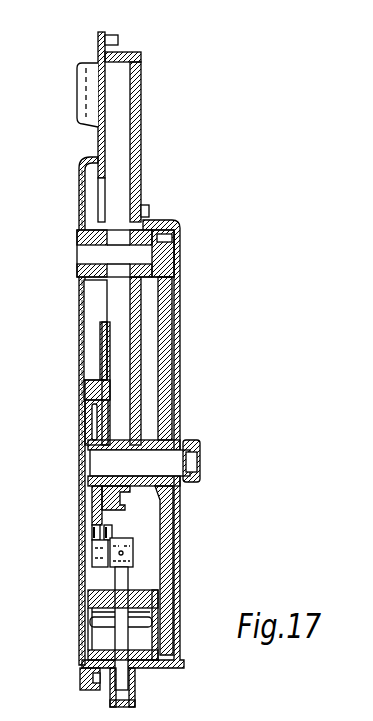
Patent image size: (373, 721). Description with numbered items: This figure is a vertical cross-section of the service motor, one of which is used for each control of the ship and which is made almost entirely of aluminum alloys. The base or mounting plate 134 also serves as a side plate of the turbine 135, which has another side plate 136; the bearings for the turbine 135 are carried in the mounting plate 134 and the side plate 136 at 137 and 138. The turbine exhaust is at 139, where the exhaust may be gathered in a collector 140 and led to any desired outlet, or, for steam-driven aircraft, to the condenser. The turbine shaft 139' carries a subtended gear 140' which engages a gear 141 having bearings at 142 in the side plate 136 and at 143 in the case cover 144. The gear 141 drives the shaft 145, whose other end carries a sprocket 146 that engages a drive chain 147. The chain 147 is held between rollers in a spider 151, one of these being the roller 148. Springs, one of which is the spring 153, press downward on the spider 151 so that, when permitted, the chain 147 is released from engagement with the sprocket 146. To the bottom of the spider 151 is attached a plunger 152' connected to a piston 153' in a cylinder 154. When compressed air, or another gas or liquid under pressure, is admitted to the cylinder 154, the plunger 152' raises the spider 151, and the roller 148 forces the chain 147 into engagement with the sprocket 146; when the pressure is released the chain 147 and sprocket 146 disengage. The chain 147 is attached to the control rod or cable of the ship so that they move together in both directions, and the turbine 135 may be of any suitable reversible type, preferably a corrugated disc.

The base or mounting plate 134 is at (78, 90).
The turbine 135 is at (117, 110).
The side plate 136 is at (141, 163).
The bearing 137 is at (77, 247).
The bearing 138 is at (180, 251).
The turbine exhaust 139 is at (62, 411).
The turbine shaft 139' is at (120, 255).
The collector 140 is at (64, 279).
The subtended gear 140' is at (191, 214).
The gear 141 is at (165, 330).
The bearing 142 is at (184, 497).
The bearing 143 is at (192, 440).
The case cover 144 is at (182, 289).
The shaft 145 is at (139, 458).
The sprocket 146 is at (92, 423).
The drive chain 147 is at (92, 532).
The roller 148 is at (92, 557).
The spider 151 is at (184, 517).
The plunger 152' is at (77, 614).
The spring 153 is at (55, 393).
The piston 153' is at (90, 627).
The cylinder 154 is at (82, 665).